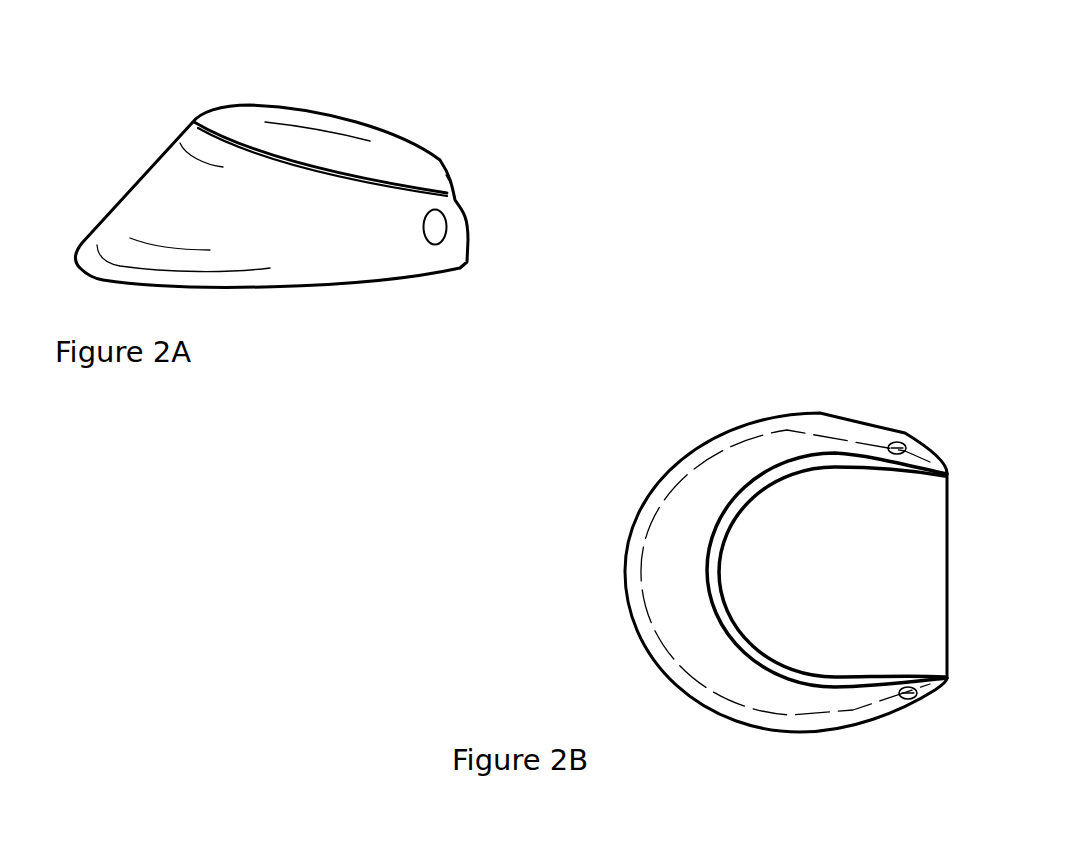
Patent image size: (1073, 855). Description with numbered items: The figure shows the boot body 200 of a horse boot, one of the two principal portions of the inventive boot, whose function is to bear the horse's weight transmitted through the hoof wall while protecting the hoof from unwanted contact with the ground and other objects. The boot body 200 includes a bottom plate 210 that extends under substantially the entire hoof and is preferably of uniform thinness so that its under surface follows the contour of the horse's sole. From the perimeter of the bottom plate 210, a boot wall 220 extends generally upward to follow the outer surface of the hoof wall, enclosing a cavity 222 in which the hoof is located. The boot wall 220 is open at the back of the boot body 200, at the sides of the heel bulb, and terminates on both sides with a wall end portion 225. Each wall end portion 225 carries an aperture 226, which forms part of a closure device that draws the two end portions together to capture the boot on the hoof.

In FIG. 2A, the boot body 200 is at (146, 106).
In FIG. 2B, the boot body 200 is at (558, 581).
In FIG. 2B, the bottom plate 210 is at (948, 606).
In FIG. 2A, the boot wall 220 is at (128, 187).
In FIG. 2B, the boot wall 220 is at (782, 462).
In FIG. 2A, the cavity 222 is at (303, 108).
In FIG. 2B, the cavity 222 is at (823, 576).
In FIG. 2A, the wall end portion 225 is at (456, 208).
In FIG. 2B, the wall end portion 225 is at (950, 479).
In FIG. 2A, the aperture 226 is at (435, 245).